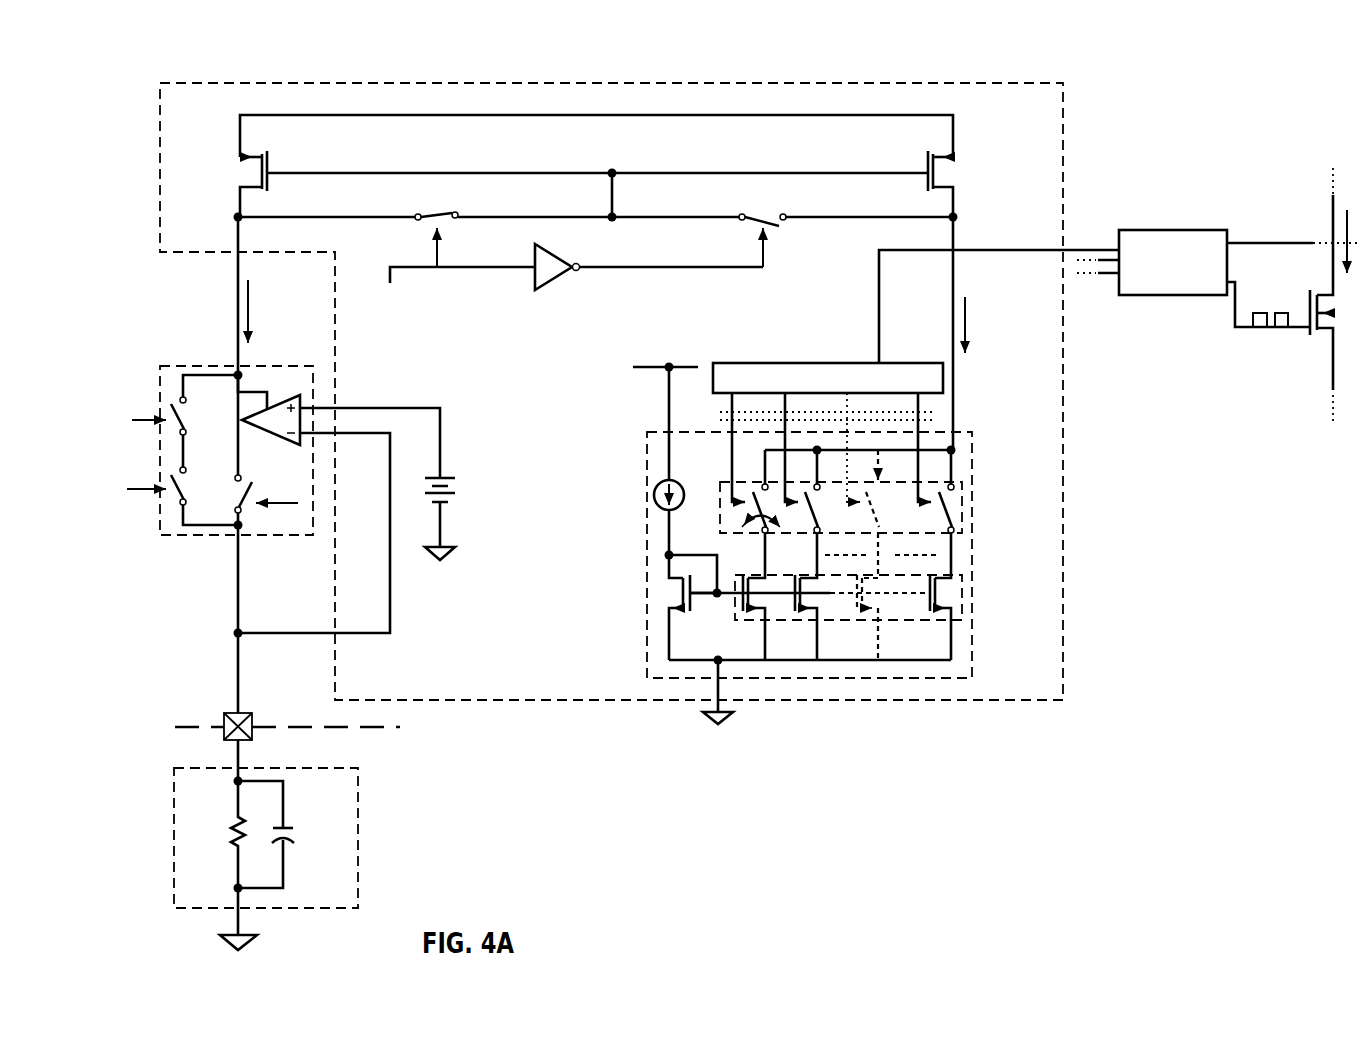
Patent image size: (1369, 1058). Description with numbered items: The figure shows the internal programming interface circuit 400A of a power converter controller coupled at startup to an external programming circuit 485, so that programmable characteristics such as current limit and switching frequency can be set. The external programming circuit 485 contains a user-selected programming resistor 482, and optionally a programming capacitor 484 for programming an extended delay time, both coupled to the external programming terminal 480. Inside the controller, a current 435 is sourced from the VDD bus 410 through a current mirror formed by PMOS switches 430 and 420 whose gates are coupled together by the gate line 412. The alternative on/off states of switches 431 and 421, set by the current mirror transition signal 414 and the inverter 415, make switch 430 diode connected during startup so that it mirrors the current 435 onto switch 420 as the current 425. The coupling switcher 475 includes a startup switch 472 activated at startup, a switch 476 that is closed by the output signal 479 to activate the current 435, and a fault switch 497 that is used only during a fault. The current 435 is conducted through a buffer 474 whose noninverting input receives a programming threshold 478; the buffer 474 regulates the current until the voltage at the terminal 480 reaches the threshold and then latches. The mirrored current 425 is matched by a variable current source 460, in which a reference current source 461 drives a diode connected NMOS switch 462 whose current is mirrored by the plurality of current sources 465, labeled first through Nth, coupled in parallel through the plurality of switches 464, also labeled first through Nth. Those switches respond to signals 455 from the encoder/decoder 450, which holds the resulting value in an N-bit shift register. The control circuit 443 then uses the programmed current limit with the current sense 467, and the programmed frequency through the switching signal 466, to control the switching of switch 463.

The internal programming interface circuit 400A is at (872, 700).
The VDD bus 410 is at (708, 315).
The gate connection line of current mirror 412 is at (538, 168).
The current mirror transition signal 414 is at (363, 300).
The inverter 415 is at (556, 290).
The PMOS switch 420 is at (968, 170).
The switch 421 is at (787, 230).
The current 425 is at (975, 325).
The PMOS switch 430 is at (237, 178).
The switch 431 is at (425, 228).
The current 435 is at (290, 300).
The control circuit 443 is at (1193, 190).
The encoder/decoder 450 is at (782, 352).
The signals 455 is at (940, 420).
The variable current source 460 is at (640, 690).
The reference current source 461 is at (660, 375).
The diode connected switch 462 is at (668, 595).
The switch 463 is at (1306, 307).
The plurality of switches 464 is at (1003, 481).
The plurality of current sources 465 is at (1000, 580).
The switching signal 466 is at (1270, 395).
The current sense 467 is at (1282, 207).
The startup switch 472 is at (253, 512).
The buffer 474 is at (275, 395).
The coupling switcher 475 is at (162, 360).
The switch 476 is at (162, 408).
The programming threshold 478 is at (465, 493).
The output signal 479 is at (233, 408).
The external programming terminal 480 is at (210, 735).
The resistor RPD 482 is at (197, 862).
The capacitor CPD 484 is at (335, 808).
The external programming circuit 485 is at (363, 805).
The fault switch 497 is at (172, 502).